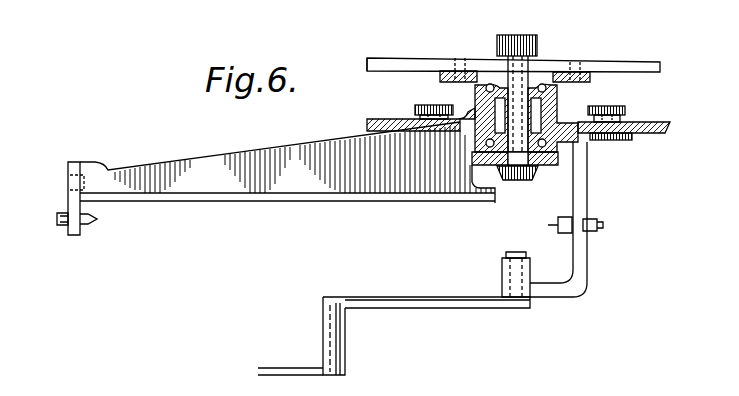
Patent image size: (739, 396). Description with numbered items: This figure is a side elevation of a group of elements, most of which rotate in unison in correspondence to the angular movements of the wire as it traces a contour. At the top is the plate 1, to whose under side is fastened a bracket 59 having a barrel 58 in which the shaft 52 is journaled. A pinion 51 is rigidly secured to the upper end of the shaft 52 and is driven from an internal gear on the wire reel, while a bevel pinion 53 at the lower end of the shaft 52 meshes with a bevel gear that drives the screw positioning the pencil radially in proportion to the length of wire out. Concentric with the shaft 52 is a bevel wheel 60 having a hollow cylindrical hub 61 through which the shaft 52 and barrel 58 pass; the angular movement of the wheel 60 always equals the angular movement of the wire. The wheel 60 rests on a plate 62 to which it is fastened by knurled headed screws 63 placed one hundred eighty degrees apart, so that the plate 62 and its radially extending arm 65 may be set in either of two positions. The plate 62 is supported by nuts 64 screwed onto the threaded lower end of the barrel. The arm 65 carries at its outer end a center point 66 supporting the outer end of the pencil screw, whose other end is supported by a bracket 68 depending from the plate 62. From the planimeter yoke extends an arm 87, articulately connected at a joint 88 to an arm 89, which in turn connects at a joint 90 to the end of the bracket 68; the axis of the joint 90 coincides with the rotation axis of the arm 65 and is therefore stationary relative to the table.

The plate 1 is at (391, 60).
The pinion 51 is at (537, 42).
The shaft 52 is at (505, 62).
The bevel pinion 53 is at (520, 183).
The barrel 58 is at (557, 108).
The bracket 59 is at (440, 77).
The bevel wheel 60 is at (663, 126).
The hollow cylindrical hub 61 is at (476, 108).
The plate 62 is at (560, 149).
The knurled headed screws 63 is at (414, 108).
The nuts 64 is at (473, 160).
The arm 65 is at (240, 158).
The center point 66 is at (57, 219).
The bracket 68 is at (580, 281).
The arm 87 is at (278, 370).
The joint 88 is at (338, 358).
The arm 89 is at (418, 297).
The joint 90 is at (507, 258).